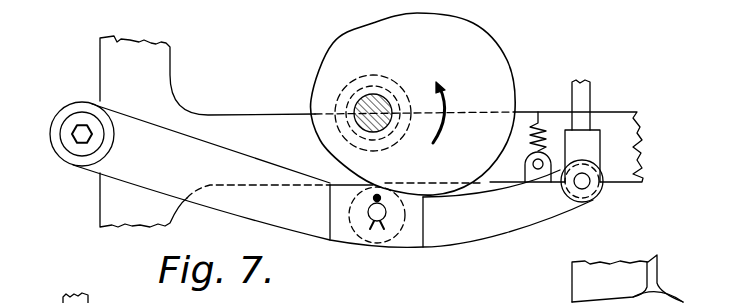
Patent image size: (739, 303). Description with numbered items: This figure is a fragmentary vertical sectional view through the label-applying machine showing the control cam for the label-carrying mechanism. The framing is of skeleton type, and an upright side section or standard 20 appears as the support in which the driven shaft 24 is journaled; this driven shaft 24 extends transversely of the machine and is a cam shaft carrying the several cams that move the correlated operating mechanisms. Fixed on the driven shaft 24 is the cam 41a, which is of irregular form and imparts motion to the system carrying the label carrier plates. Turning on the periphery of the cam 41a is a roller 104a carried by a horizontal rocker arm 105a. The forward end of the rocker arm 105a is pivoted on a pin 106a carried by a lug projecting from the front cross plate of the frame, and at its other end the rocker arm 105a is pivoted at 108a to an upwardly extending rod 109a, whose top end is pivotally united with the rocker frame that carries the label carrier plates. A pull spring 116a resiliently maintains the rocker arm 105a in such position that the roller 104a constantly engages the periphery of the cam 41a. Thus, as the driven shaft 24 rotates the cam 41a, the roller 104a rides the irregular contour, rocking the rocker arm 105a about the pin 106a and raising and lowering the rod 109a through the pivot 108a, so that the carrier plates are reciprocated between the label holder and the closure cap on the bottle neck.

The upright side section or standard 20 is at (243, 122).
The driven shaft 24 is at (368, 102).
The cam 41a is at (488, 58).
The roller 104a is at (372, 238).
The horizontal rocker arm 105a is at (490, 233).
The pin 106a is at (80, 131).
The pivot 108a is at (583, 183).
The upwardly extending rod 109a is at (583, 97).
The pull spring 116a is at (540, 111).